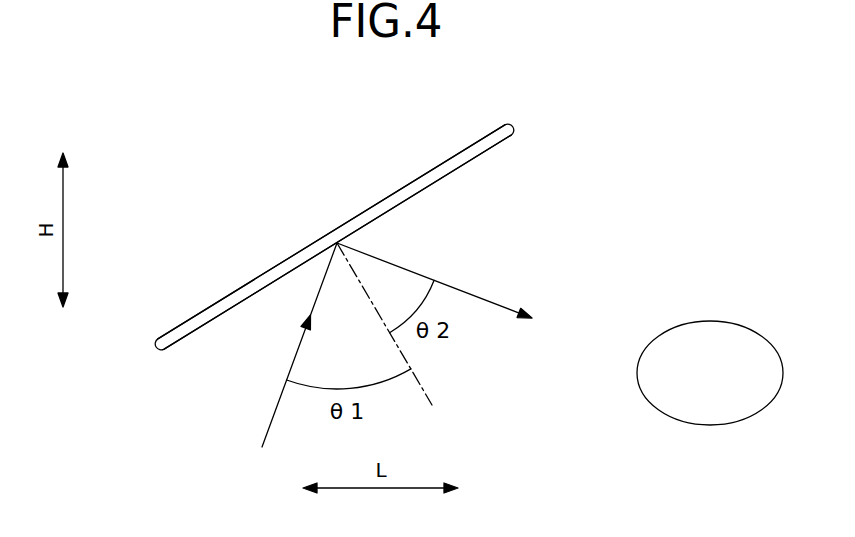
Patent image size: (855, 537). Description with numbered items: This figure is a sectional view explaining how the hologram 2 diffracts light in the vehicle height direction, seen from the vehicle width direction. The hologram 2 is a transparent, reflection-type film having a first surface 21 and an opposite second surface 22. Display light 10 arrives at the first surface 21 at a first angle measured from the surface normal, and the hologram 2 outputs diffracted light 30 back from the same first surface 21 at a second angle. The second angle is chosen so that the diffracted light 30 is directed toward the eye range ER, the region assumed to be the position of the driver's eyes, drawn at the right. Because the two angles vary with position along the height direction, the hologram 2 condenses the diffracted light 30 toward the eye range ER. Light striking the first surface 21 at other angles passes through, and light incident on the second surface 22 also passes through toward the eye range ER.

The hologram 2 is at (418, 180).
The first surface 21 is at (435, 182).
The second surface 22 is at (352, 219).
The display light 10 is at (273, 415).
The diffracted light 30 is at (493, 302).
The eye range ER is at (715, 345).